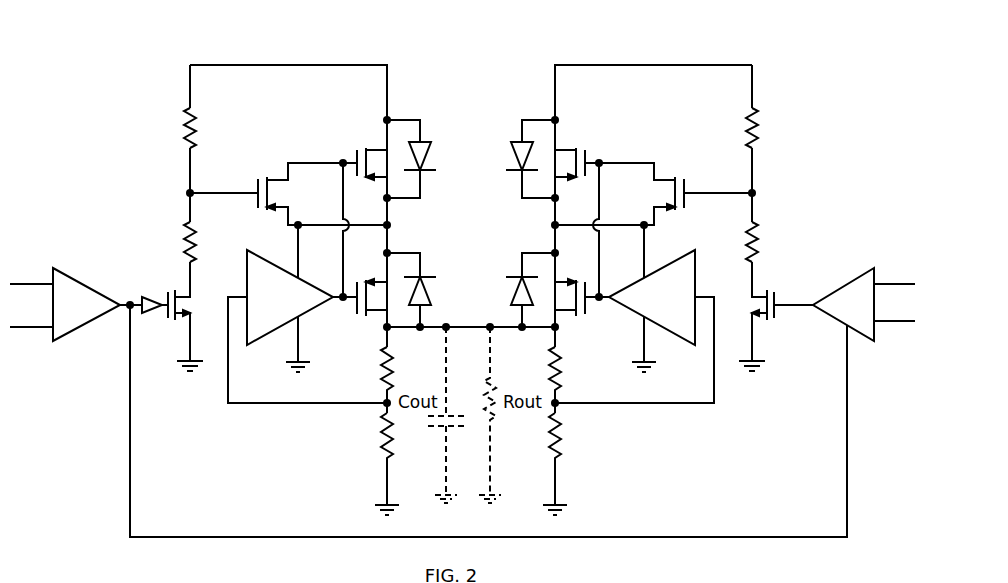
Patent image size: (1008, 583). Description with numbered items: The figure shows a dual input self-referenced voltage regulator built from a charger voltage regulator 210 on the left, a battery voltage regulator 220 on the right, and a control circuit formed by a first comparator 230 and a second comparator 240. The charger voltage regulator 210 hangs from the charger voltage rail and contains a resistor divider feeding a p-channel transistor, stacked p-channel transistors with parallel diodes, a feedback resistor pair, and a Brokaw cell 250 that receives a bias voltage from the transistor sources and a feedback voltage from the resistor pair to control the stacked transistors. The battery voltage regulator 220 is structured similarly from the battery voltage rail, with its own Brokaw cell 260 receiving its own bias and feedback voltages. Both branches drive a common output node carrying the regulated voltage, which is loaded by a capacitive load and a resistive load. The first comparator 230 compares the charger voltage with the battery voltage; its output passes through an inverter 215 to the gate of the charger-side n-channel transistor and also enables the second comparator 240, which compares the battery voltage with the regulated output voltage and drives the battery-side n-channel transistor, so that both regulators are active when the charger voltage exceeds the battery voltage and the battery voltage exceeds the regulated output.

The charger voltage regulator 210 is at (436, 41).
The battery voltage regulator 220 is at (795, 41).
The first comparator 230 is at (75, 277).
The second comparator 240 is at (857, 277).
The Brokaw cell 250 is at (247, 262).
The Brokaw cell 260 is at (695, 262).
The inverter 215 is at (152, 296).